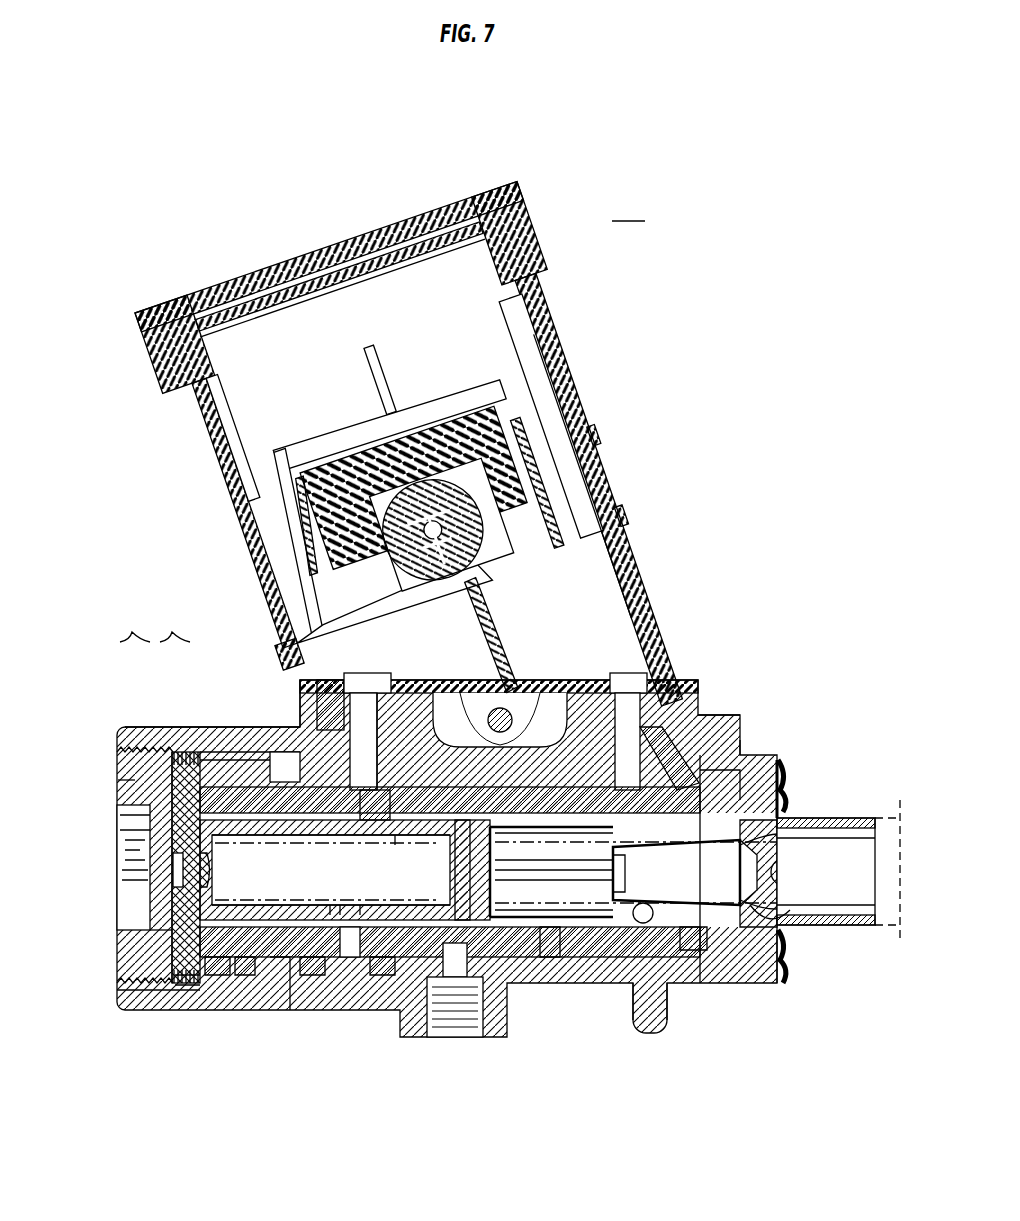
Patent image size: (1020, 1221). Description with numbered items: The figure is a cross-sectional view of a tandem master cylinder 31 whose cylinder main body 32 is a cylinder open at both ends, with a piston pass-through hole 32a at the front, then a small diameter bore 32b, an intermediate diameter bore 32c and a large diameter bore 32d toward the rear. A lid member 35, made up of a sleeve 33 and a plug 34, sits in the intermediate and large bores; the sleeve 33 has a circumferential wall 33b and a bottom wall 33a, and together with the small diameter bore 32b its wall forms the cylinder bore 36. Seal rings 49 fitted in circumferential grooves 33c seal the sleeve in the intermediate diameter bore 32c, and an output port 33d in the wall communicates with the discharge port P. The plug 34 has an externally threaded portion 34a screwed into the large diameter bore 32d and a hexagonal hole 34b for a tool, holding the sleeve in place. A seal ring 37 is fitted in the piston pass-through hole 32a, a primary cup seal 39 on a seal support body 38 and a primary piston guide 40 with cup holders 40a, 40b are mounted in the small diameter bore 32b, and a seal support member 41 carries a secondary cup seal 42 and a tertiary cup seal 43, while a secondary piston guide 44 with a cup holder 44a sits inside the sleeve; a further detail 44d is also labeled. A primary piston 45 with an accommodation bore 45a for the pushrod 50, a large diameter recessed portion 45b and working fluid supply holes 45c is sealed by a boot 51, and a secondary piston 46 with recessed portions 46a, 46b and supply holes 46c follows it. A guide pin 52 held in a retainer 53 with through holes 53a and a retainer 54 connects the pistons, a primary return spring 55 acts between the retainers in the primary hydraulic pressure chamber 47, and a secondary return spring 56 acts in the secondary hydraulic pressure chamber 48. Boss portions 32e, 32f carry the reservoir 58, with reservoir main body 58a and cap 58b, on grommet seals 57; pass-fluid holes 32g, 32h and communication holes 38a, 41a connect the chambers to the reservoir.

The master cylinder 31 is at (629, 206).
The cylinder main body 32 is at (489, 1048).
The piston pass-through hole 32a is at (778, 935).
The small diameter bore 32b is at (595, 935).
The intermediate diameter bore 32c is at (282, 975).
The large diameter bore 32d is at (147, 992).
The boss portion 32e is at (700, 740).
The boss portion 32f is at (298, 685).
The pass-fluid hole 32g is at (697, 770).
The pass-fluid hole 32h is at (385, 680).
The sleeve 33 is at (195, 740).
The bottom wall 33a is at (120, 822).
The circumferential wall 33b is at (197, 982).
The circumferential grooves 33c is at (308, 975).
The output port 33d is at (292, 752).
The plug 34 is at (155, 735).
The externally threaded portion 34a is at (157, 729).
The hexagonal hole 34b is at (160, 905).
The lid member 35 is at (155, 619).
The cylinder bore 36 is at (207, 750).
The seal ring 37 is at (765, 795).
The seal support body 38 is at (755, 935).
The communication hole 38a is at (716, 795).
The primary cup seal 39 is at (648, 935).
The primary piston guide 40 is at (580, 935).
The cup holder 40a is at (648, 855).
The cup holder 40b is at (395, 795).
The seal support member 41 is at (420, 935).
The communication hole 41a is at (378, 975).
The secondary cup seal 42 is at (396, 835).
The tertiary cup seal 43 is at (350, 945).
The secondary piston guide 44 is at (265, 935).
The cup holder 44a is at (325, 835).
The piston end face 44d is at (118, 782).
The primary piston 45 is at (846, 810).
The accommodation bore 45a is at (808, 912).
The large diameter recessed portion 45b is at (615, 935).
The working fluid supply holes 45c is at (730, 852).
The secondary piston 46 is at (535, 720).
The large diameter recessed portion 46a is at (512, 800).
The intermediate diameter recessed portion 46b is at (335, 905).
The working fluid supply holes 46c is at (360, 840).
The primary hydraulic pressure chamber 47 is at (555, 935).
The secondary hydraulic pressure chamber 48 is at (217, 980).
The seal rings 49 is at (338, 680).
The pushrod 50 is at (905, 845).
The boot 51 is at (790, 760).
The guide pin 52 is at (558, 855).
The retainer 53 is at (790, 838).
The through holes 53a is at (672, 700).
The retainer 54 is at (458, 887).
The primary return spring 55 is at (765, 862).
The secondary return spring 56 is at (125, 872).
The grommet seals 57 is at (420, 680).
The reservoir 58 is at (396, 208).
The reservoir main body 58a is at (563, 386).
The cap 58b is at (263, 269).
The discharge port P is at (266, 840).